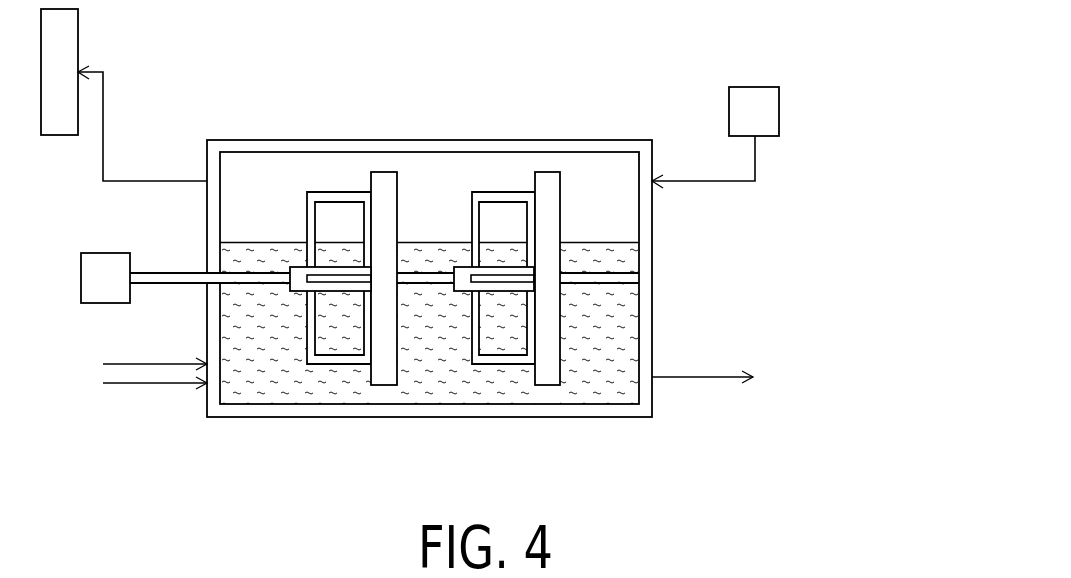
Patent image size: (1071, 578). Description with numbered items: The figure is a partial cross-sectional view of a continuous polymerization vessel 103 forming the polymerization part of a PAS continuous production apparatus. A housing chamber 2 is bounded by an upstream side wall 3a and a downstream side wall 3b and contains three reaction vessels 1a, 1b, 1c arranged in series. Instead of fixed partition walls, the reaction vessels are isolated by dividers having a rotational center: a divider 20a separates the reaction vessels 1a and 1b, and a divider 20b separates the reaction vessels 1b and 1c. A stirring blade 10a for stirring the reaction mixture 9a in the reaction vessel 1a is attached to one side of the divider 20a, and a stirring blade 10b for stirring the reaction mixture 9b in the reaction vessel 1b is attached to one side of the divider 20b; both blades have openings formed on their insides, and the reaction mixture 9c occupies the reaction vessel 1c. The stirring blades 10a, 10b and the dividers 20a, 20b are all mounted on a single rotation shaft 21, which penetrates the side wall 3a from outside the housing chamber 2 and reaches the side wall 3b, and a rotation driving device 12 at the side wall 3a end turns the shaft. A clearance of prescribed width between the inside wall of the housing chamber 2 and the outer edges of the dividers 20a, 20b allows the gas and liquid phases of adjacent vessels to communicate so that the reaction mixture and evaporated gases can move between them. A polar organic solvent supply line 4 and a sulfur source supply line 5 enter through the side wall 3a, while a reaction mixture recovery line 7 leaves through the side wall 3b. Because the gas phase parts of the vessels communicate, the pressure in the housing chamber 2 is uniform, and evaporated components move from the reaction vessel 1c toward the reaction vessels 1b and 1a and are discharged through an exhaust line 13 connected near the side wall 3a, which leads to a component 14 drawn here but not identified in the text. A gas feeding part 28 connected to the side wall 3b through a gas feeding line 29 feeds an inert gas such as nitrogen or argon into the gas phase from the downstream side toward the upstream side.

The continuous polymerization vessel 103 is at (598, 52).
The housing chamber 2 is at (648, 127).
The reaction vessel 1a is at (280, 175).
The reaction vessel 1b is at (441, 175).
The reaction vessel 1c is at (598, 175).
The stirring blade 10a is at (339, 197).
The stirring blade 10b is at (503, 198).
The divider 20a is at (384, 183).
The divider 20b is at (547, 183).
The rotation shaft 21 is at (168, 271).
The rotation driving device 12 is at (107, 253).
The exhaust line 13 is at (155, 180).
The recovery tank 14 is at (79, 31).
The gas feeding part 28 is at (755, 87).
The gas feeding line 29 is at (703, 180).
The polar organic solvent supply line 4 is at (157, 361).
The sulfur source supply line 5 is at (125, 386).
The side wall 3a is at (207, 391).
The side wall 3b is at (654, 392).
The reaction mixture recovery line 7 is at (703, 375).
The reaction mixture 9a is at (272, 386).
The reaction mixture 9b is at (420, 386).
The reaction mixture 9c is at (590, 390).